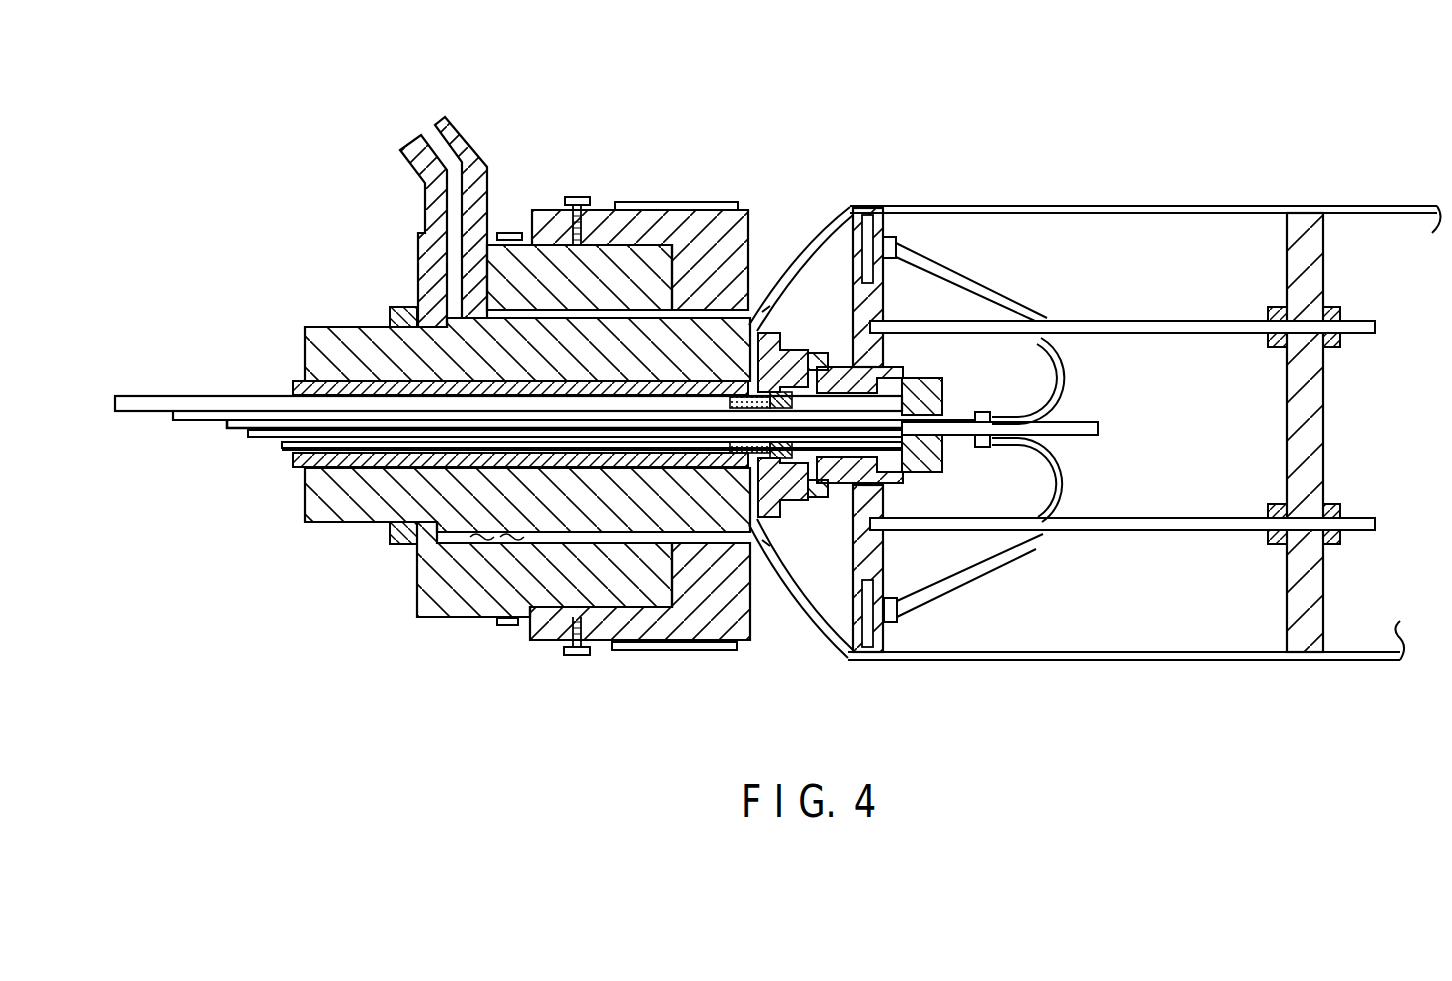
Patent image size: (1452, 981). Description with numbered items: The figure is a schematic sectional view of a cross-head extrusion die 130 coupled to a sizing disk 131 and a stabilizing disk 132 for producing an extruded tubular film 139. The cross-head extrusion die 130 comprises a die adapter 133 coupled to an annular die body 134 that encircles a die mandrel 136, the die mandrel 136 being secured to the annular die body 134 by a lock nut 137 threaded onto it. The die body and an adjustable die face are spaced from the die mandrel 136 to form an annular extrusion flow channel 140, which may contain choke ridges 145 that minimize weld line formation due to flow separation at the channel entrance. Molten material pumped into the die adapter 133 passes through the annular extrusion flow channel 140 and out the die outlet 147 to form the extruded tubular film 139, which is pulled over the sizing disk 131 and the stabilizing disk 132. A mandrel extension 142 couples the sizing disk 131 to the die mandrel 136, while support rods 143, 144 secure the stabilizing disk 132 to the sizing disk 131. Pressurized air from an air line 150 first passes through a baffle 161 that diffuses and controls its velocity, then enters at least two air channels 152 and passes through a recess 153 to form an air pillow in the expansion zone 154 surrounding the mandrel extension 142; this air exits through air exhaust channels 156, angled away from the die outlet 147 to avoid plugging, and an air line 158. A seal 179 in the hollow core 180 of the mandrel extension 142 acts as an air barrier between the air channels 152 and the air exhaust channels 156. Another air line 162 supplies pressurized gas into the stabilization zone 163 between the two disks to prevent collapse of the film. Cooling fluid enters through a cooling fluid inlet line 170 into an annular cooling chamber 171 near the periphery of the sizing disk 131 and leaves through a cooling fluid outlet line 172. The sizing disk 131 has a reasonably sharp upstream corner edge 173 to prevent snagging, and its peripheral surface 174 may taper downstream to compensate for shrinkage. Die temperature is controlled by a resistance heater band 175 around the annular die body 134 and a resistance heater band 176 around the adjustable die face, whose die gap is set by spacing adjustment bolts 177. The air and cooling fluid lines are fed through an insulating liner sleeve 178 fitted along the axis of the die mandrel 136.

The cross-head extrusion die 130 is at (365, 632).
The sizing disk 131 is at (885, 562).
The stabilizing disk 132 is at (1337, 270).
The die adapter 133 is at (474, 152).
The annular die body 134 is at (460, 620).
The die mandrel 136 is at (320, 512).
The lock nut 137 is at (397, 308).
The extruded tubular film 139 is at (984, 207).
The annular extrusion flow channel 140 is at (583, 310).
The mandrel extension 142 is at (800, 350).
The support rod 143 is at (1150, 321).
The support rod 144 is at (1123, 531).
The choke ridges 145 is at (488, 543).
The die outlet 147 is at (763, 572).
The air line 150 is at (263, 396).
The air channels 152 is at (770, 517).
The recess 153 is at (755, 312).
The expansion zone 154 is at (830, 218).
The air exhaust channels 156 is at (885, 494).
The air line 158 is at (173, 418).
The baffle 161 is at (732, 385).
The air line 162 is at (1080, 420).
The stabilization zone 163 is at (1198, 207).
The cooling fluid inlet line 170 is at (226, 430).
The annular cooling chamber 171 is at (885, 224).
The cooling fluid outlet line 172 is at (270, 440).
The upstream corner edge 173 is at (868, 207).
The peripheral surface 174 is at (877, 660).
The resistance heater band 175 is at (507, 626).
The resistance heater band 176 is at (713, 650).
The spacing adjustment bolts 177 is at (577, 196).
The liner sleeve 178 is at (290, 452).
The seal 179 is at (835, 353).
The hollow core 180 is at (925, 393).